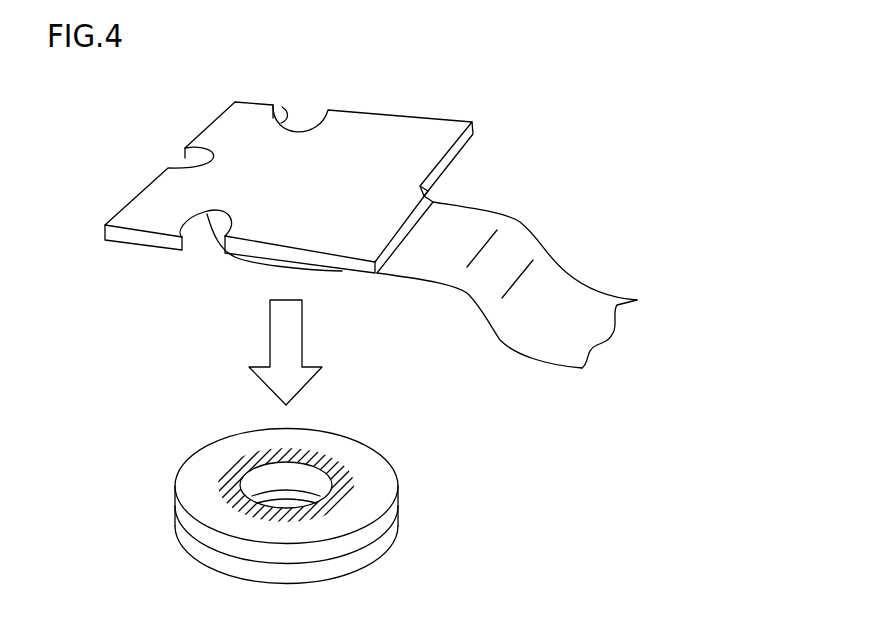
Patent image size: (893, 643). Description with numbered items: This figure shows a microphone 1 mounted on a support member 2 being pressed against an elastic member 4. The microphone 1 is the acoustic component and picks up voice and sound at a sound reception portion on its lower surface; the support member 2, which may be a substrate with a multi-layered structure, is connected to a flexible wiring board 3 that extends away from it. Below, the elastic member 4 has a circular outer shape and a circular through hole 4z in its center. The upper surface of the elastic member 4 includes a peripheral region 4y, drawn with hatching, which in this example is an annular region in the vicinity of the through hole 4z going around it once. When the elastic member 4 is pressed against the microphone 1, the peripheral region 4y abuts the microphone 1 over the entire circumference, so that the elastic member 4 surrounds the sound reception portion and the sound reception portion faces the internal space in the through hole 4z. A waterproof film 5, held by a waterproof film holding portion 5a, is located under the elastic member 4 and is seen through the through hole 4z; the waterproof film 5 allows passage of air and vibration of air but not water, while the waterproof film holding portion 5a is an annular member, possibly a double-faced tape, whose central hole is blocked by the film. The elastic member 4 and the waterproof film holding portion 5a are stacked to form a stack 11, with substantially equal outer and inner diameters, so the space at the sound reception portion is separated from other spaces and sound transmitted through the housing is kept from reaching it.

The microphone 1 is at (371, 217).
The support member 2 is at (378, 138).
The flexible wiring board 3 is at (517, 245).
The elastic member 4 is at (303, 487).
The peripheral region 4y is at (345, 495).
The through hole 4z is at (325, 468).
The waterproof film 5 is at (310, 497).
The waterproof film holding portion 5a is at (447, 514).
The stack 11 is at (322, 497).